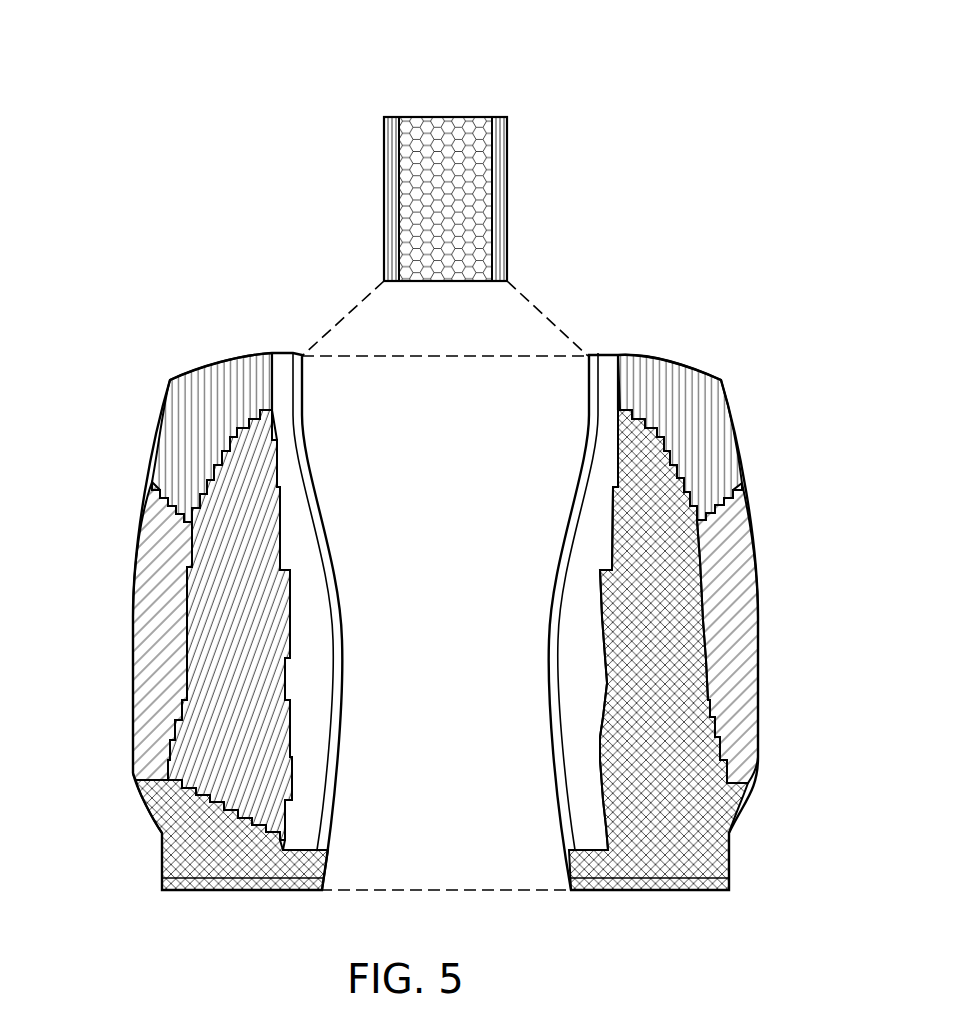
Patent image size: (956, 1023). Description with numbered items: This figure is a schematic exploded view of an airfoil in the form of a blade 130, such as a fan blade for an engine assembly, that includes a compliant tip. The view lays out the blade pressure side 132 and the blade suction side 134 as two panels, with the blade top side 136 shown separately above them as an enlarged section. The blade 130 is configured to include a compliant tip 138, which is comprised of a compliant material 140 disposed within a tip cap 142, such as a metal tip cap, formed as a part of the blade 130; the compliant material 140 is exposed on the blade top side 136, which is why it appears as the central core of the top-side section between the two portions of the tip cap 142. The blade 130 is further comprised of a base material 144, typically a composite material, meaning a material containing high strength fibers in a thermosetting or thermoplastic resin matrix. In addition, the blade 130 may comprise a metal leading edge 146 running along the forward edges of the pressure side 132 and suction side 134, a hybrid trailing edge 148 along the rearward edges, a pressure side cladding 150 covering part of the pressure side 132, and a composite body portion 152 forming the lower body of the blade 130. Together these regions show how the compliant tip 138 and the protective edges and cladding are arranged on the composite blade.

The blade 130 is at (257, 120).
The blade pressure side 132 is at (225, 337).
The blade suction side 134 is at (665, 337).
The blade top side 136 is at (444, 72).
The compliant tip 138 is at (473, 170).
The compliant material 140 is at (470, 123).
The tip cap 142 is at (183, 407).
The base material 144 is at (603, 642).
The metal leading edge 146 is at (298, 515).
The hybrid trailing edge 148 is at (147, 652).
The pressure side cladding 150 is at (280, 640).
The composite body portion 152 is at (165, 843).